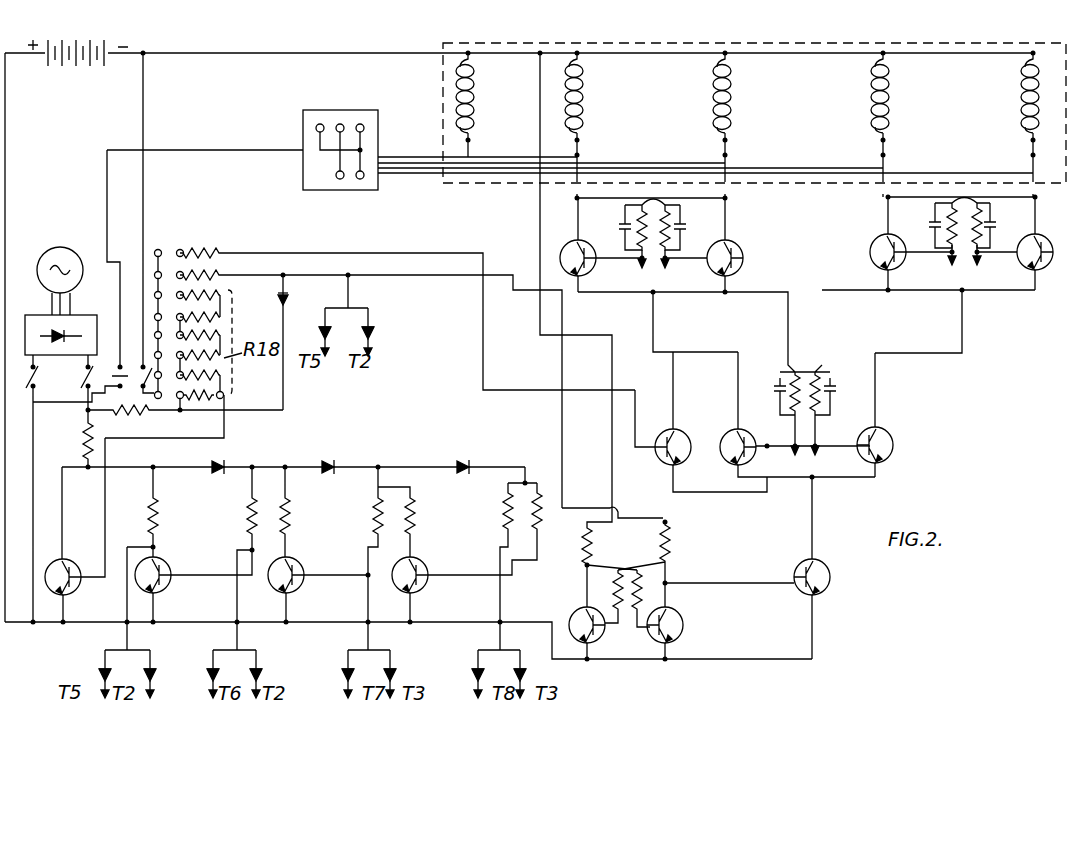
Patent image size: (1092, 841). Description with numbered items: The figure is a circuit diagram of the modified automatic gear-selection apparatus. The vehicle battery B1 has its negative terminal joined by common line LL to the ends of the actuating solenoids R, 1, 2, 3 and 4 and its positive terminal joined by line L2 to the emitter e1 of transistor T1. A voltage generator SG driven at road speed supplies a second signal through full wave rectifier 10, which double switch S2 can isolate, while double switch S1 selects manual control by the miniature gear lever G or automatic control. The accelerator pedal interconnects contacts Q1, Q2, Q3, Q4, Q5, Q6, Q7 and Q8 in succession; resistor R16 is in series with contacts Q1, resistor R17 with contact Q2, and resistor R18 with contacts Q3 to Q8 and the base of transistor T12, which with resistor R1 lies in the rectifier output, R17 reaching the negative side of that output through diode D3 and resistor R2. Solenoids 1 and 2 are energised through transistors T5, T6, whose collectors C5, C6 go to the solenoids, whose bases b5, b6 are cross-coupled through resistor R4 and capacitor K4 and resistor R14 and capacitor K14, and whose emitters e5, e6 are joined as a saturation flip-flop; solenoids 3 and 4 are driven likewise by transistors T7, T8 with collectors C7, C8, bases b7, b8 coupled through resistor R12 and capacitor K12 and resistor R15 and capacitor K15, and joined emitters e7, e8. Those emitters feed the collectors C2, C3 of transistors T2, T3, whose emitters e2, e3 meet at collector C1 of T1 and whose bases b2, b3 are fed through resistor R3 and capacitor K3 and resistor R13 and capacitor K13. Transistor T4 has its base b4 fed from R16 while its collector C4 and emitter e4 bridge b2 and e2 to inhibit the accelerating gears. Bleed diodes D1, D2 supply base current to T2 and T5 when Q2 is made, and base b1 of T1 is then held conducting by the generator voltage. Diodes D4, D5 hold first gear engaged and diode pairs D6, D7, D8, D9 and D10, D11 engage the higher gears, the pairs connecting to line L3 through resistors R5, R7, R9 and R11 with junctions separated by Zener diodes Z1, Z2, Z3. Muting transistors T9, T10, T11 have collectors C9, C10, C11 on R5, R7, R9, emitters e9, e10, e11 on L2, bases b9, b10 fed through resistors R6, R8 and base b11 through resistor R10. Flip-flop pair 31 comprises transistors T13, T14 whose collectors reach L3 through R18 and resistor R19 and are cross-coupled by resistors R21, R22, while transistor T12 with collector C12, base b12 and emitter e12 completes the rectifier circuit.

The vehicle battery B1 is at (100, 62).
The common line LL is at (283, 53).
The positive battery line L2 is at (8, 166).
The voltage generator SG is at (60, 247).
The full wave rectifier 10 is at (38, 316).
The double switch S1 is at (132, 361).
The double switch S2 is at (59, 387).
The resistor R1 is at (84, 442).
The resistor R2 is at (132, 422).
The contacts Q1 is at (162, 250).
The contact Q2 is at (184, 250).
The contacts Q3 is at (178, 293).
The contacts Q4 is at (178, 316).
The contacts Q5 is at (178, 334).
The contacts Q6 is at (184, 345).
The contacts Q7 is at (184, 372).
The contacts Q8 is at (189, 416).
The resistor R16 is at (222, 255).
The resistor R17 is at (222, 277).
The resistor R18 is at (595, 541).
The semi-conductor diode D3 is at (280, 302).
The bleed diode D1 is at (318, 318).
The bleed diode D2 is at (374, 320).
The miniature gear lever G is at (376, 108).
The actuating solenoid R is at (474, 98).
The actuating solenoid 1 is at (580, 94).
The actuating solenoid 2 is at (730, 93).
The actuating solenoid 3 is at (890, 92).
The actuating solenoid 4 is at (1024, 97).
The transistor T5 is at (572, 242).
The collector C5 is at (584, 246).
The base b5 is at (560, 258).
The emitter e5 is at (582, 280).
The resistor R4 is at (640, 213).
The capacitor K4 is at (627, 268).
The capacitor K14 is at (686, 226).
The resistor R14 is at (668, 215).
The collector C6 is at (733, 246).
The transistor T6 is at (745, 256).
The base b6 is at (745, 266).
The emitter e6 is at (730, 280).
The transistor T7 is at (868, 246).
The collector C7 is at (882, 238).
The base b7 is at (870, 251).
The emitter e7 is at (870, 262).
The resistor R12 is at (950, 213).
The capacitor K12 is at (927, 225).
The resistor R15 is at (980, 219).
The capacitor K15 is at (1007, 225).
The collector C8 is at (1038, 240).
The transistor T8 is at (1048, 250).
The base b8 is at (1053, 258).
The emitter e8 is at (1042, 272).
The resistor R13 is at (805, 375).
The capacitor K13 is at (836, 392).
The resistor R3 is at (822, 409).
The capacitor K3 is at (782, 407).
The collector C2 is at (742, 425).
The transistor T2 is at (727, 439).
The base b2 is at (760, 452).
The emitter e2 is at (732, 462).
The collector C4 is at (668, 425).
The transistor T4 is at (677, 428).
The base b4 is at (655, 453).
The emitter e4 is at (666, 462).
The collector C3 is at (878, 428).
The transistor T3 is at (892, 438).
The base b3 is at (893, 446).
The emitter e3 is at (880, 462).
The line L3 is at (280, 467).
The Zener diode Z1 is at (209, 476).
The Zener diode Z2 is at (319, 476).
The Zener diode Z3 is at (449, 476).
The resistor R10 is at (505, 488).
The resistor R11 is at (538, 532).
The collector C12 is at (70, 560).
The transistor T12 is at (80, 558).
The base b12 is at (82, 586).
The emitter e12 is at (66, 600).
The resistor R5 is at (160, 506).
The resistor R6 is at (248, 516).
The collector C9 is at (160, 556).
The muting transistor T9 is at (170, 564).
The base b9 is at (172, 586).
The emitter e9 is at (160, 597).
The resistor R7 is at (290, 516).
The collector C10 is at (290, 556).
The muting transistor T10 is at (300, 567).
The base b10 is at (300, 585).
The emitter e10 is at (292, 599).
The resistor R8 is at (376, 516).
The resistor R9 is at (416, 516).
The collector C11 is at (416, 556).
The muting transistor T11 is at (428, 568).
The base b11 is at (425, 585).
The emitter e11 is at (416, 599).
The flip-flop pair 31 is at (618, 512).
The resistor R19 is at (672, 541).
The resistor R22 is at (645, 586).
The resistor R21 is at (614, 590).
The transistor T13 is at (569, 629).
The transistor T14 is at (683, 621).
The transistor T1 is at (800, 565).
The collector C1 is at (815, 562).
The base b1 is at (729, 569).
The emitter e1 is at (820, 589).
The semi-conductor diode D4 is at (97, 674).
The semi-conductor diode D5 is at (152, 672).
The semi-conductor diode D6 is at (210, 677).
The semi-conductor diode D7 is at (258, 672).
The semi-conductor diode D8 is at (345, 675).
The semi-conductor diode D9 is at (393, 674).
The semi-conductor diode D10 is at (475, 670).
The semi-conductor diode D11 is at (523, 672).